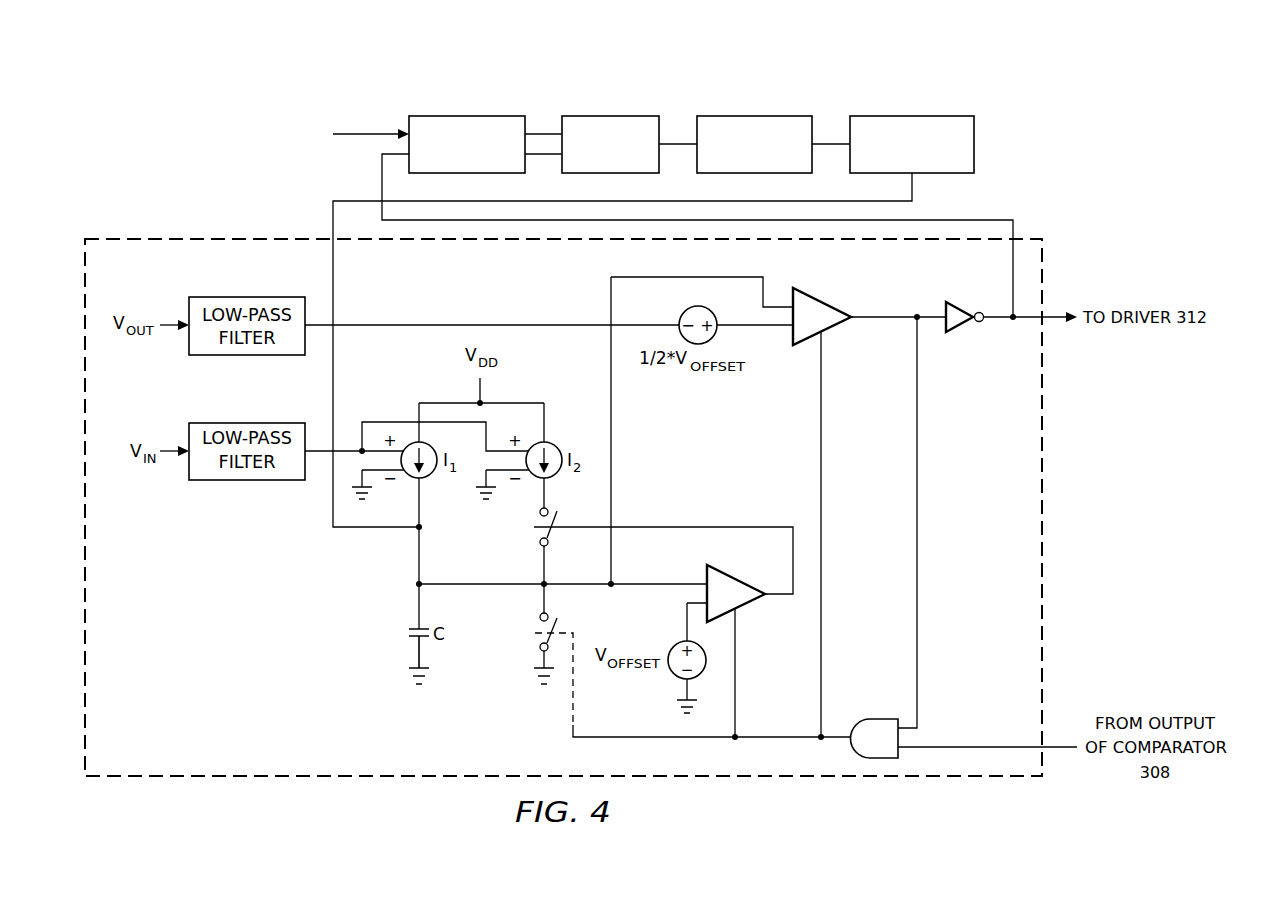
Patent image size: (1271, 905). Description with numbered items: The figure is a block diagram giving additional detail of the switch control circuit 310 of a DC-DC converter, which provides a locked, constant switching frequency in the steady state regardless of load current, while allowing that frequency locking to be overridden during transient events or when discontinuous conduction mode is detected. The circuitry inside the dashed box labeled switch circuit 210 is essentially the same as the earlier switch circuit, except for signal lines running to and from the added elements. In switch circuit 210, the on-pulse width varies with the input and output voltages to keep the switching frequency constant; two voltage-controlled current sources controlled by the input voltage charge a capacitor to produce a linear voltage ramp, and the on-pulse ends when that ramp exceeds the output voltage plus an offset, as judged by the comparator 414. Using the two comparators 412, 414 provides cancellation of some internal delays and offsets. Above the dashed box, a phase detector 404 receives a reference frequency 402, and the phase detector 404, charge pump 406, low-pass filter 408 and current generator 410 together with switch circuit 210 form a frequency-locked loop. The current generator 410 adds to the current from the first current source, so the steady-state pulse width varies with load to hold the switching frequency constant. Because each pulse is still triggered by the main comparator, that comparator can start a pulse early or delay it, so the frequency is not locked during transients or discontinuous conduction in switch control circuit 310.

The switch circuit 210 is at (176, 233).
The switch control circuit 310 is at (1110, 114).
The reference frequency 402 is at (372, 133).
The phase detector 404 is at (468, 115).
The charge pump 406 is at (613, 115).
The low-pass filter 408 is at (754, 115).
The current generator 410 is at (917, 115).
The comparator 412 is at (737, 575).
The comparator 414 is at (821, 300).